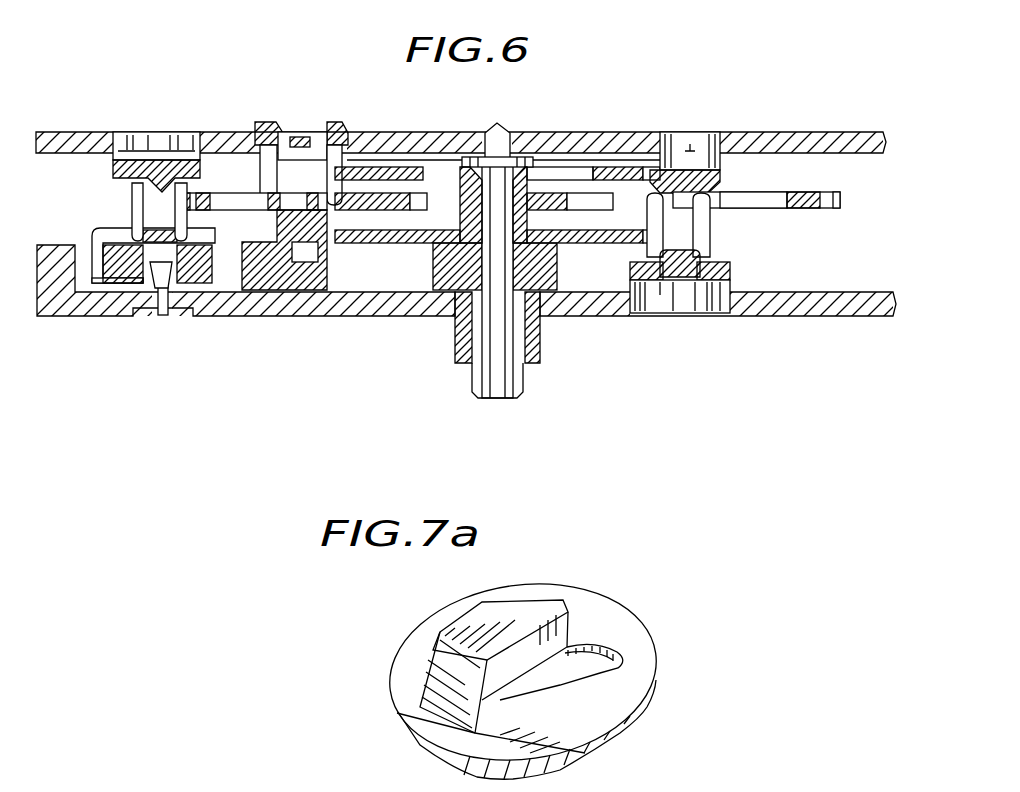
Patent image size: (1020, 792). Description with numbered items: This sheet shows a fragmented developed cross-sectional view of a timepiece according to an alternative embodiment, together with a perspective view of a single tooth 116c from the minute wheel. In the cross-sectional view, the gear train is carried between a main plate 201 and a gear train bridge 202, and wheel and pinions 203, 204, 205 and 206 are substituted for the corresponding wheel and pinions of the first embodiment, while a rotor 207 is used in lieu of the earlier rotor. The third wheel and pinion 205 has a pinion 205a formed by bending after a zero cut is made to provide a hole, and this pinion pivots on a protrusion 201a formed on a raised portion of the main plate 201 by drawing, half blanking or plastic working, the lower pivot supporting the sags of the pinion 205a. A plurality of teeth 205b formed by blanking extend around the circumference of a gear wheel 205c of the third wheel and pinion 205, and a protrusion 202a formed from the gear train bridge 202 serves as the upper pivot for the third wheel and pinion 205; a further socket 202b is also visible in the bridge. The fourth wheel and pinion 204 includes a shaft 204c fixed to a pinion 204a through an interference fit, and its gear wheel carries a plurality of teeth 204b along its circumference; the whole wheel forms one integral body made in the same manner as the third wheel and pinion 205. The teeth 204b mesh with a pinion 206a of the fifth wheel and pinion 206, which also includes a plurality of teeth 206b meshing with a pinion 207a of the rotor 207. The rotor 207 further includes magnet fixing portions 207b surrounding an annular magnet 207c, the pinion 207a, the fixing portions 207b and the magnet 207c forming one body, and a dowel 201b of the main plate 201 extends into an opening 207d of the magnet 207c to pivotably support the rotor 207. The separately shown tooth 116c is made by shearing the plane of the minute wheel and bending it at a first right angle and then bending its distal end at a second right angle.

In FIG. 6, the main plate 201 is at (796, 308).
In FIG. 6, the protrusion 201a is at (655, 315).
In FIG. 6, the dowel 201b is at (171, 320).
In FIG. 6, the gear train bridge 202 is at (744, 138).
In FIG. 6, the protrusion 202a is at (682, 192).
In FIG. 6, the socket in upper plate 202b is at (162, 190).
In FIG. 6, the wheel and pinion 203 is at (556, 310).
In FIG. 6, the fourth wheel and pinion 204 is at (632, 243).
In FIG. 6, the pinion 204a is at (475, 200).
In FIG. 6, the teeth 204b is at (349, 164).
In FIG. 6, the shaft 204c is at (520, 157).
In FIG. 6, the third wheel and pinion 205 is at (798, 205).
In FIG. 6, the pinion 205a is at (703, 315).
In FIG. 6, the teeth 205b is at (838, 197).
In FIG. 6, the gear wheel 205c is at (774, 190).
In FIG. 6, the fifth wheel and pinion 206 is at (204, 192).
In FIG. 6, the pinion 206a is at (272, 153).
In FIG. 6, the teeth 206b is at (388, 142).
In FIG. 6, the rotor 207 is at (118, 234).
In FIG. 6, the pinion 207a is at (137, 203).
In FIG. 6, the magnet fixing portions 207b is at (78, 318).
In FIG. 6, the magnet 207c is at (198, 318).
In FIG. 6, the opening 207d is at (157, 312).
In FIG. 7A, the teeth 116c is at (496, 626).